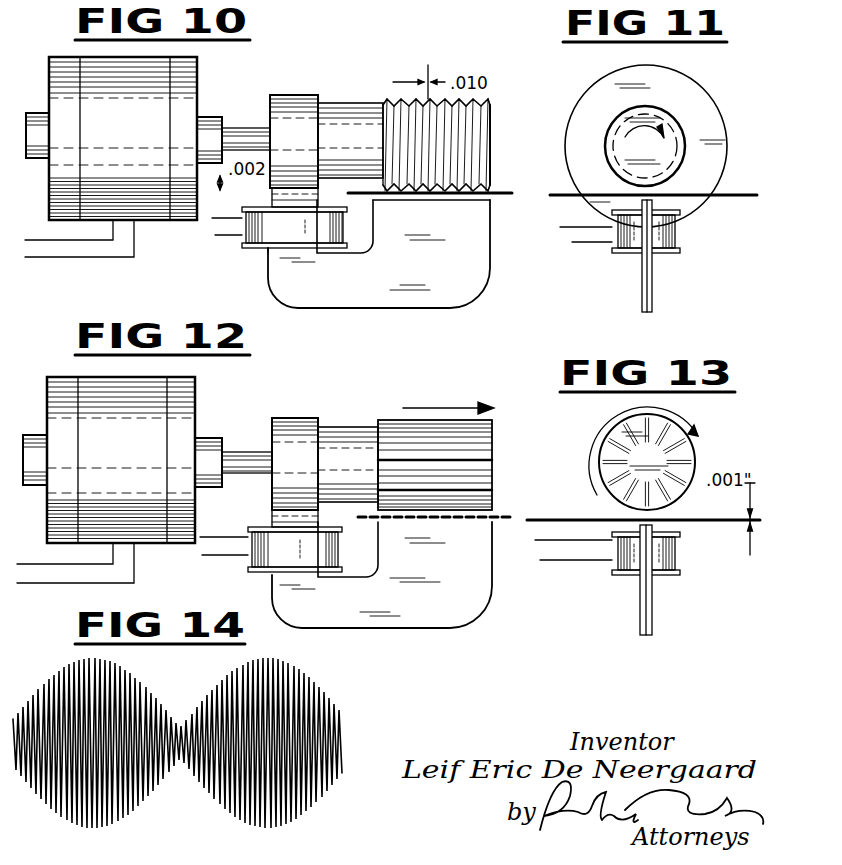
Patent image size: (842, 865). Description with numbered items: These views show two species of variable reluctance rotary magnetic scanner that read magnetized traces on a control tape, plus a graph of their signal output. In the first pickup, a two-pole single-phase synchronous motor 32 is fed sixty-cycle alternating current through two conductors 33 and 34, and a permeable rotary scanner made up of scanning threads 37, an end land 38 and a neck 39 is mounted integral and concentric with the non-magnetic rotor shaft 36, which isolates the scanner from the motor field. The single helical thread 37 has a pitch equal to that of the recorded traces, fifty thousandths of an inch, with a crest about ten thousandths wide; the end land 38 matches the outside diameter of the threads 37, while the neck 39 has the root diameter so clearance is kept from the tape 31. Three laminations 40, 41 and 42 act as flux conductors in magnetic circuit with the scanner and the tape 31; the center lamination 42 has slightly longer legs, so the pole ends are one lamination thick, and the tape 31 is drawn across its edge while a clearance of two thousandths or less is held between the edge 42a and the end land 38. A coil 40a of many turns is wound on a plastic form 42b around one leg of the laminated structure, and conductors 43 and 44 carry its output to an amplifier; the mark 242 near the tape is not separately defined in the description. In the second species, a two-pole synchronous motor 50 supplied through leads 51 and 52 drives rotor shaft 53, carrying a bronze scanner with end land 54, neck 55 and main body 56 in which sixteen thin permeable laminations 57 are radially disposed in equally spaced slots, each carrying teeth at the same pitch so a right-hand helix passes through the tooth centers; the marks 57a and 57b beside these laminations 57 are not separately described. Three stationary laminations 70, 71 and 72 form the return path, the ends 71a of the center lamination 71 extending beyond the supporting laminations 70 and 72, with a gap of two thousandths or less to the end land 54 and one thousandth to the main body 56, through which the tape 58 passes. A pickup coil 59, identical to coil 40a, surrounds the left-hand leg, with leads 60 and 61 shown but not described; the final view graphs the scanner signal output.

In FIG. 10, the control record tape 31 is at (495, 193).
In FIG. 11, the control record tape 31 is at (720, 195).
In FIG. 10, the synchronous motor 32 is at (148, 208).
In FIG. 11, the synchronous motor 32 is at (672, 85).
In FIG. 10, the conductor 33 is at (48, 235).
In FIG. 10, the conductor 34 is at (72, 258).
In FIG. 10, the rotor shaft 36 is at (258, 126).
In FIG. 10, the scanning threads 37 is at (380, 100).
In FIG. 11, the scanning threads 37 is at (672, 125).
In FIG. 10, the end land 38 is at (291, 75).
In FIG. 10, the neck 39 is at (362, 91).
In FIG. 10, the lamination 40 is at (343, 236).
In FIG. 11, the lamination 40 is at (652, 292).
In FIG. 11, the coil 40a is at (676, 237).
In FIG. 10, the lamination 41 is at (460, 272).
In FIG. 11, the lamination 41 is at (642, 292).
In FIG. 11, the center lamination 42 is at (647, 312).
In FIG. 10, the edge of lamination 42a is at (272, 196).
In FIG. 10, the plastic form 42b is at (265, 248).
In FIG. 10, the conductor 43 is at (221, 218).
In FIG. 11, the conductor 43 is at (588, 224).
In FIG. 10, the conductor 44 is at (223, 235).
In FIG. 11, the conductor 44 is at (600, 242).
In FIG. 10, the pole piece 242 is at (376, 200).
In FIG. 12, the synchronous motor 50 is at (150, 535).
In FIG. 12, the lead 51 is at (66, 567).
In FIG. 12, the lead 52 is at (74, 598).
In FIG. 12, the rotor shaft 53 is at (258, 473).
In FIG. 12, the end land 54 is at (272, 425).
In FIG. 12, the neck 55 is at (350, 433).
In FIG. 12, the main body 56 is at (492, 428).
In FIG. 13, the main body 56 is at (610, 458).
In FIG. 12, the laminations 57 is at (492, 462).
In FIG. 13, the laminations 57 is at (690, 446).
In FIG. 13, the slot 57a is at (606, 484).
In FIG. 13, the direction of rotation 57b is at (672, 410).
In FIG. 12, the control tape 58 is at (500, 520).
In FIG. 13, the control tape 58 is at (598, 518).
In FIG. 12, the pickup coil 59 is at (338, 555).
In FIG. 13, the pickup coil 59 is at (676, 560).
In FIG. 12, the coil lead 60 is at (236, 537).
In FIG. 13, the coil lead 60 is at (560, 533).
In FIG. 12, the coil lead 61 is at (246, 560).
In FIG. 13, the coil lead 61 is at (552, 566).
In FIG. 12, the stationary lamination 70 is at (450, 600).
In FIG. 13, the stationary lamination 70 is at (640, 620).
In FIG. 13, the center lamination 71 is at (646, 635).
In FIG. 12, the ends of center lamination 71a is at (385, 521).
In FIG. 13, the ends of center lamination 71a is at (655, 528).
In FIG. 13, the stationary lamination 72 is at (652, 618).